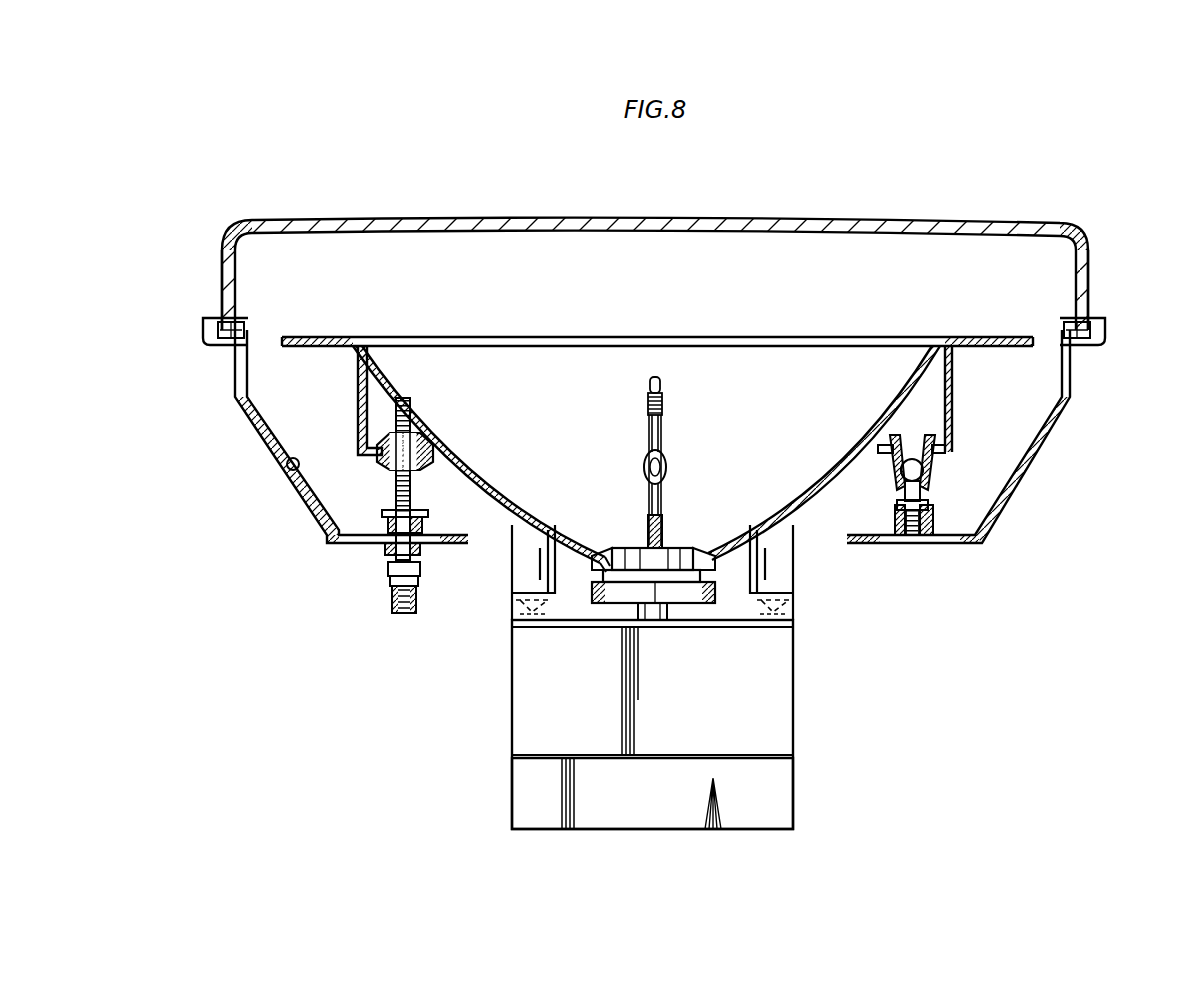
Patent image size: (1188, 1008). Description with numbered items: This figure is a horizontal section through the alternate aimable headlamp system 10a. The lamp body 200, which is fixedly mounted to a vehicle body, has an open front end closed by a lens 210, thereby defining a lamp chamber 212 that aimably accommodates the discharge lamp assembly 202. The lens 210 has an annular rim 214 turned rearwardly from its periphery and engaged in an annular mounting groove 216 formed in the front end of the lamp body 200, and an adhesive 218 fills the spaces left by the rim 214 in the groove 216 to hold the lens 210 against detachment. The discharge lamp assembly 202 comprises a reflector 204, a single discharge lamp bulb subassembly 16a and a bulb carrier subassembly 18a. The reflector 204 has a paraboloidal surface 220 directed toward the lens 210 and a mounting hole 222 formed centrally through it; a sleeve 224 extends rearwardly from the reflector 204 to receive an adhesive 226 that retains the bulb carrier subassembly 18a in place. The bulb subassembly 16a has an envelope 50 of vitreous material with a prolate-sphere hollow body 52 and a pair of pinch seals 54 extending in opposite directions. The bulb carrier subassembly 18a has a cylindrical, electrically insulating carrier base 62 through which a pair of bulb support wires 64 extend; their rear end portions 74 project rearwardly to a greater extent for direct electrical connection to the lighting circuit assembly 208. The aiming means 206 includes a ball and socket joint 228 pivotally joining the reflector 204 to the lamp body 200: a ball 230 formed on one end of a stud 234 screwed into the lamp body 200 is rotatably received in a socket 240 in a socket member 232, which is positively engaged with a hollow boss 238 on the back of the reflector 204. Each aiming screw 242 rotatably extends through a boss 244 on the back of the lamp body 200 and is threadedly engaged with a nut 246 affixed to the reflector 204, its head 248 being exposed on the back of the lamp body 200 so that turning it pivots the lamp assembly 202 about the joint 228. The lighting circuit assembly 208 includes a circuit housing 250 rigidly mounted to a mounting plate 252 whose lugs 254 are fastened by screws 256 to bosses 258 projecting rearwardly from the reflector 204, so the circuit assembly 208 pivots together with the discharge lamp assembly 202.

The aimable headlamp system 10a is at (935, 195).
The discharge lamp bulb subassembly 16a is at (690, 426).
The bulb carrier subassembly 18a is at (682, 527).
The envelope 50 is at (648, 470).
The hollow body 52 is at (663, 470).
The pinch seals 54 is at (648, 432).
The carrier base 62 is at (685, 552).
The bulb support wires 64 is at (661, 385).
The rear end portions 74 is at (662, 625).
The lamp body 200 is at (240, 423).
The discharge lamp assembly 202 is at (877, 323).
The reflector 204 is at (960, 345).
The aiming means 206 is at (375, 492).
The lighting circuit assembly 208 is at (500, 732).
The lens 210 is at (650, 216).
The lamp chamber 212 is at (290, 470).
The annular rim 214 is at (228, 258).
The annular mounting groove 216 is at (230, 320).
The adhesive 218 is at (203, 333).
The paraboloidal surface 220 is at (552, 522).
The mounting hole 222 is at (612, 556).
The sleeve 224 is at (555, 630).
The adhesive 226 is at (735, 627).
The ball and socket joint 228 is at (960, 497).
The ball 230 is at (905, 483).
The socket member 232 is at (938, 462).
The stud 234 is at (935, 545).
The hollow boss 238 is at (965, 448).
The socket 240 is at (932, 478).
The aiming screws 242 is at (415, 486).
The boss 244 is at (400, 543).
The nut 246 is at (372, 452).
The heads 248 is at (412, 592).
The circuit housing 250 is at (793, 798).
The mounting plate 252 is at (585, 625).
The lugs 254 is at (520, 605).
The screws 256 is at (532, 632).
The bosses 258 is at (520, 572).